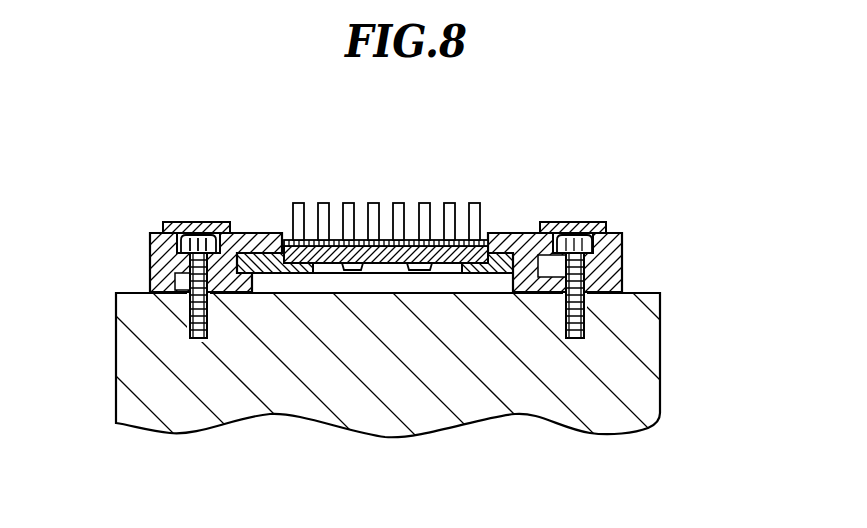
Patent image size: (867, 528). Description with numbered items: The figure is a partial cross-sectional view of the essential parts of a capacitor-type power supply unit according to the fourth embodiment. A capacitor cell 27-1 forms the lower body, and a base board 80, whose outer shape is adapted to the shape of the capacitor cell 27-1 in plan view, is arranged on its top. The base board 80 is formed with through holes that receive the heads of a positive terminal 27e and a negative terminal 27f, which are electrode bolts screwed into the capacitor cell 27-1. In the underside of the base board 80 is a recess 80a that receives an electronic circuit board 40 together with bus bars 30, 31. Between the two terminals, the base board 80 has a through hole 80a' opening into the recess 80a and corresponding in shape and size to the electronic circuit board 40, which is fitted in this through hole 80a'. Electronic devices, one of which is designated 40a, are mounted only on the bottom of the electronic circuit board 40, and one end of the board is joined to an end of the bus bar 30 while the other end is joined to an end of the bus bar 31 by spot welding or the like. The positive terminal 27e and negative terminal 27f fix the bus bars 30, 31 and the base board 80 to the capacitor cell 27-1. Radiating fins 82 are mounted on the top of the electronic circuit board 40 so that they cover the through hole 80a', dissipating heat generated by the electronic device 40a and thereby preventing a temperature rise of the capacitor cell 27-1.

The capacitor cell 27-1 is at (647, 353).
The positive terminal 27e is at (150, 272).
The negative terminal 27f is at (582, 268).
The bus bar 30 is at (240, 275).
The bus bar 31 is at (518, 252).
The electronic circuit board 40 is at (443, 283).
The electronic device 40a is at (352, 270).
The base board 80 is at (187, 222).
The recess 80a is at (386, 364).
The through hole 80a' is at (386, 196).
The radiating fins 82 is at (298, 203).